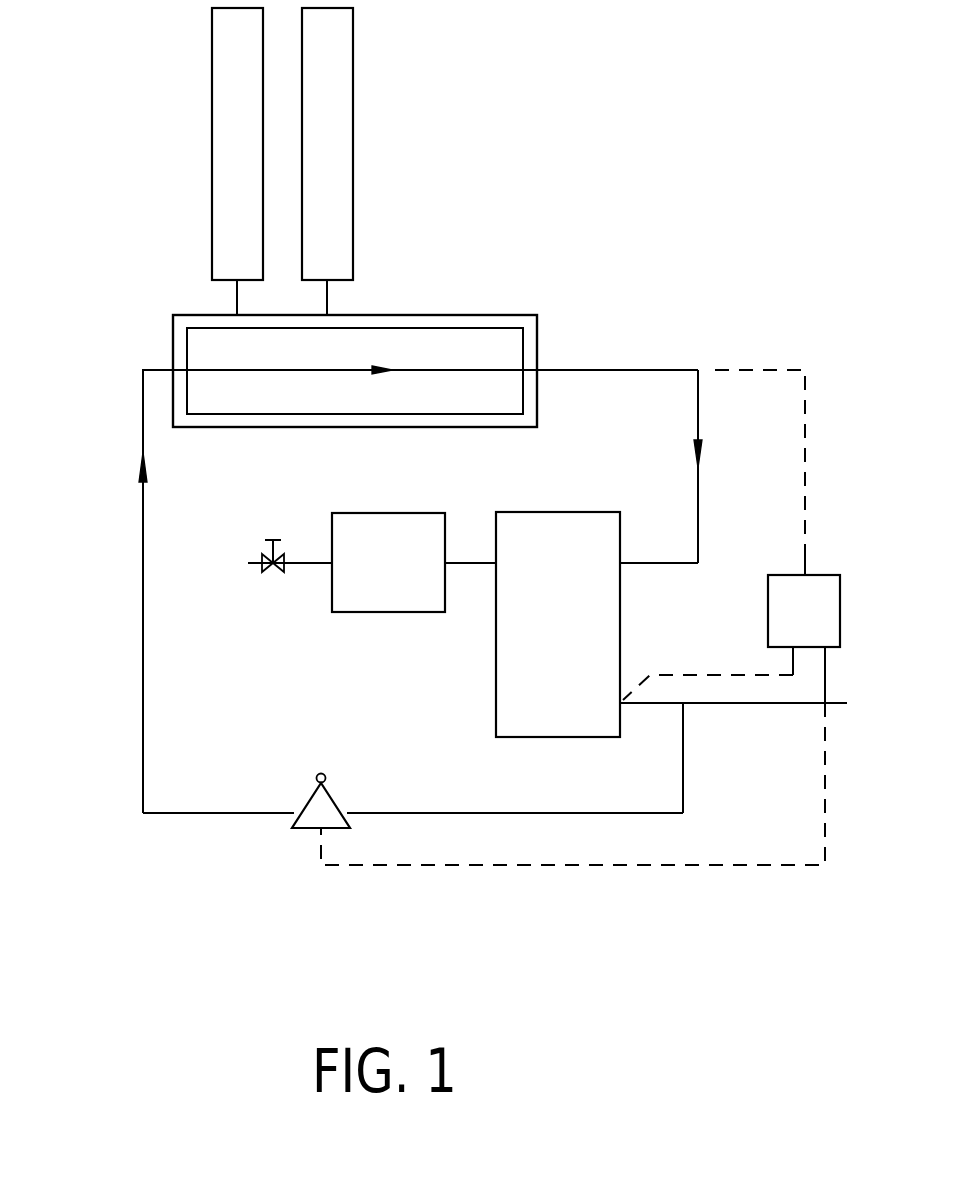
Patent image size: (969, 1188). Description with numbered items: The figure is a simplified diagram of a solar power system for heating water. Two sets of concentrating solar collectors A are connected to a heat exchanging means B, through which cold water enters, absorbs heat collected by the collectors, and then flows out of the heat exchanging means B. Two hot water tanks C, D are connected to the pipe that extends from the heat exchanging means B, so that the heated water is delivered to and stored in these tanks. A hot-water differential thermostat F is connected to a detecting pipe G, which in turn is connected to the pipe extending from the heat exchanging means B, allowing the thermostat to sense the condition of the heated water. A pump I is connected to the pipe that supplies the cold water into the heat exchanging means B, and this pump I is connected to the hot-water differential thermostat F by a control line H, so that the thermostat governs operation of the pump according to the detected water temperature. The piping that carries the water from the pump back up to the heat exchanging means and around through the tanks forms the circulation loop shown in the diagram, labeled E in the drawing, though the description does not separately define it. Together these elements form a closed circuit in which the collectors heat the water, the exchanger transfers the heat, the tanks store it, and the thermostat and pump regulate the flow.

The concentrating solar collectors A is at (134, 112).
The heat exchanging means B is at (458, 278).
The hot water tank C is at (598, 505).
The hot water tank D is at (393, 518).
The circulation line E is at (143, 559).
The hot-water differential thermostat F is at (838, 552).
The detecting pipe G is at (808, 348).
The control line H is at (596, 868).
The pump I is at (302, 843).